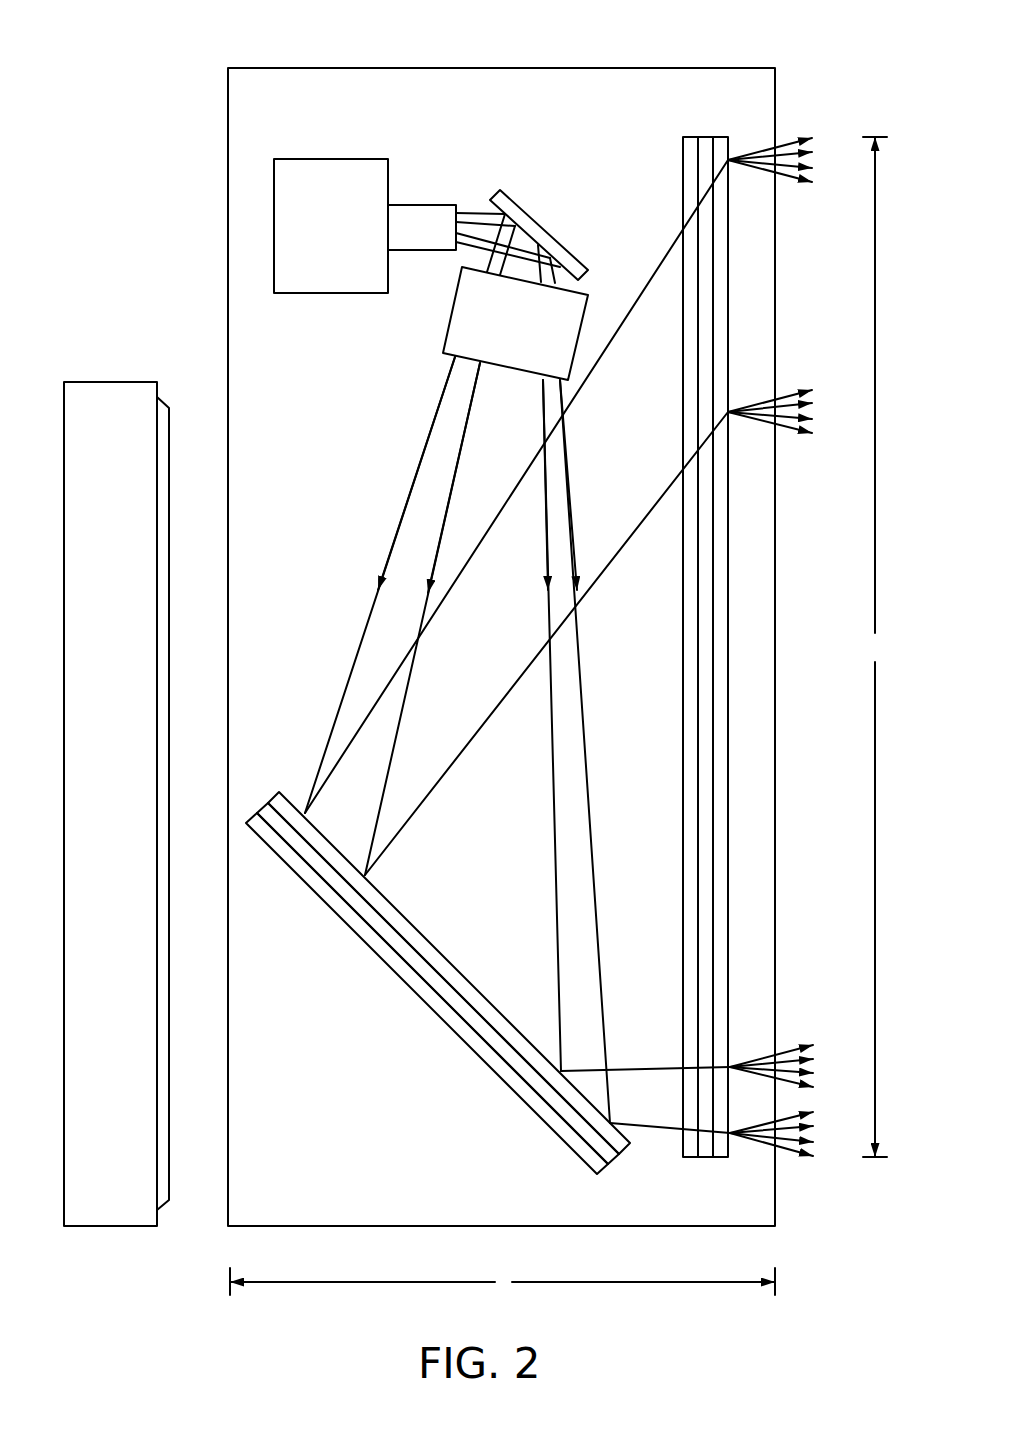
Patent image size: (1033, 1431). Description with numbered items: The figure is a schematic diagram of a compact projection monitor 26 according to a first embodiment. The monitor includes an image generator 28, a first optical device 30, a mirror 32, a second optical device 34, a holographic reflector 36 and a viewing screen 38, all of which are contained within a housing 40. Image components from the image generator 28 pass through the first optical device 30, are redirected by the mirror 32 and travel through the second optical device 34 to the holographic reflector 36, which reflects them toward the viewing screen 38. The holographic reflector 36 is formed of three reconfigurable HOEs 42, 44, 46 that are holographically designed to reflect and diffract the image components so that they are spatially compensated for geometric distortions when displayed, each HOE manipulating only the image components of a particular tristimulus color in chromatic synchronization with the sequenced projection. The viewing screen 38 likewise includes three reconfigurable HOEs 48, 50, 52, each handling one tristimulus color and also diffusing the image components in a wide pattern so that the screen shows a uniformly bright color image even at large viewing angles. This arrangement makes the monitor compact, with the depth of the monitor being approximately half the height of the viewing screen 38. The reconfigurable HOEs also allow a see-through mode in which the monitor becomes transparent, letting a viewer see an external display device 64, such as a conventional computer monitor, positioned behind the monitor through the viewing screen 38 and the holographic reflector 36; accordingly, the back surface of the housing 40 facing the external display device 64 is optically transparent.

The compact projection monitor 26 is at (687, 37).
The image generator 28 is at (327, 167).
The first optical device 30 is at (413, 212).
The mirror 32 is at (517, 212).
The second optical device 34 is at (450, 340).
The holographic reflector 36 is at (466, 1006).
The viewing screen 38 is at (691, 613).
The housing 40 is at (315, 68).
The reconfigurable HOE 42 is at (598, 1167).
The reconfigurable HOE 44 is at (615, 1158).
The reconfigurable HOE 46 is at (625, 1147).
The reconfigurable HOE 48 is at (689, 137).
The reconfigurable HOE 50 is at (706, 137).
The reconfigurable HOE 52 is at (722, 137).
The external display device 64 is at (98, 382).